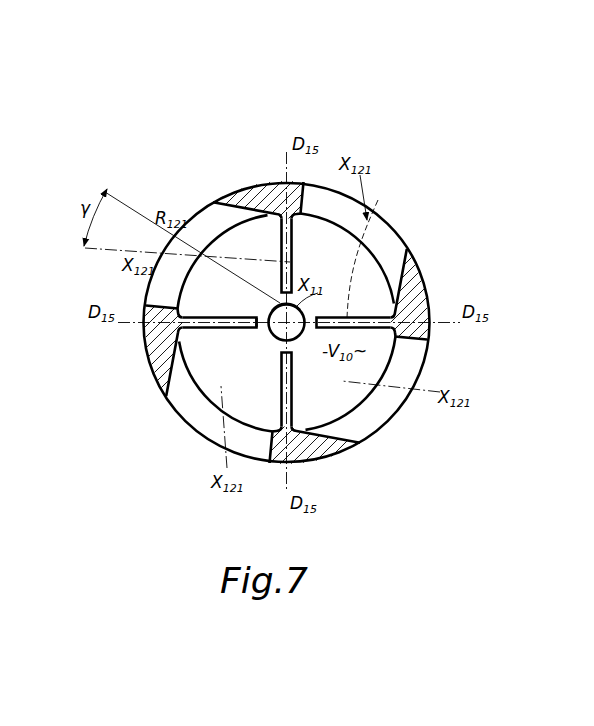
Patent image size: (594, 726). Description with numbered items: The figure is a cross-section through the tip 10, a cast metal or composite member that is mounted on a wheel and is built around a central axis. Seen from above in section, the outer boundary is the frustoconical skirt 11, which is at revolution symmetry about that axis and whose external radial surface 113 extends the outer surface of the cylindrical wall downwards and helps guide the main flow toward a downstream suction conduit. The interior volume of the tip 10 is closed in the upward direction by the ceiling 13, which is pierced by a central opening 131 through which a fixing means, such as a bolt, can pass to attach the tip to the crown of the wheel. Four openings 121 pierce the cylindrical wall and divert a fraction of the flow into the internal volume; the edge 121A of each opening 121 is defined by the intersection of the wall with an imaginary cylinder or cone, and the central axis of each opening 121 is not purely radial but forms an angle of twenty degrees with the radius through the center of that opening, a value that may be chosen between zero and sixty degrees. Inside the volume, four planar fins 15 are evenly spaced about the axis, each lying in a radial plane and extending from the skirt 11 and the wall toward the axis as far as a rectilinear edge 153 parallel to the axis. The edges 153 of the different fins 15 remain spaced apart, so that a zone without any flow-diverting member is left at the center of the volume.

The tip 10 is at (207, 172).
The skirt 11 is at (428, 275).
The ceiling 13 is at (249, 400).
The opening 131 is at (280, 303).
The fin 15 is at (293, 262).
The edge 153 is at (256, 323).
The opening 121 is at (372, 218).
The edge of an opening 121A is at (286, 150).
The external radial surface of the skirt 113 is at (334, 462).